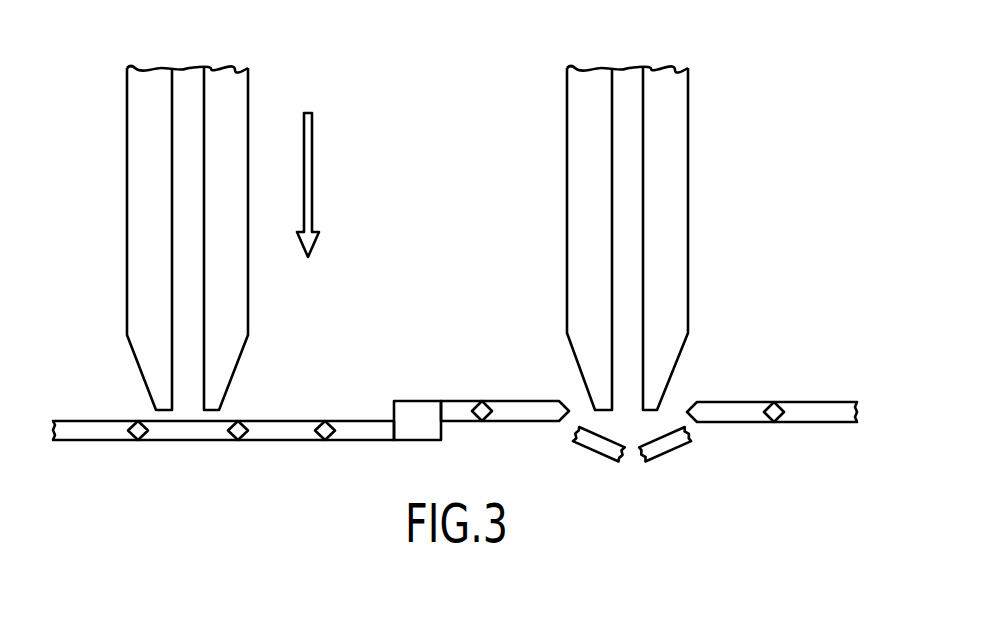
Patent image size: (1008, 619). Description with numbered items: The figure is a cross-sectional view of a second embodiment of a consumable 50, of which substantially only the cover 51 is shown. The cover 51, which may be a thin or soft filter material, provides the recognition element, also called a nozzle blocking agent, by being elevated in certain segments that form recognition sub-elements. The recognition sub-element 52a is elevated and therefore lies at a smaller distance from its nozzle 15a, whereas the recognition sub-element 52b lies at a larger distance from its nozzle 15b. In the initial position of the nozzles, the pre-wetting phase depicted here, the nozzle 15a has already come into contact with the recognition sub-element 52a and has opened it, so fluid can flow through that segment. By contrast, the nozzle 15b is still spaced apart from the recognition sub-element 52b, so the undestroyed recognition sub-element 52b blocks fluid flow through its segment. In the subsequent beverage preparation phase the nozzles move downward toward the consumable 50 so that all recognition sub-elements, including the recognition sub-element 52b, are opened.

The nozzle 15a is at (688, 205).
The nozzle 15b is at (127, 205).
The consumable 50 is at (822, 343).
The cover 51 is at (835, 422).
The recognition sub-element 52a is at (509, 401).
The recognition sub-element 52b is at (361, 421).